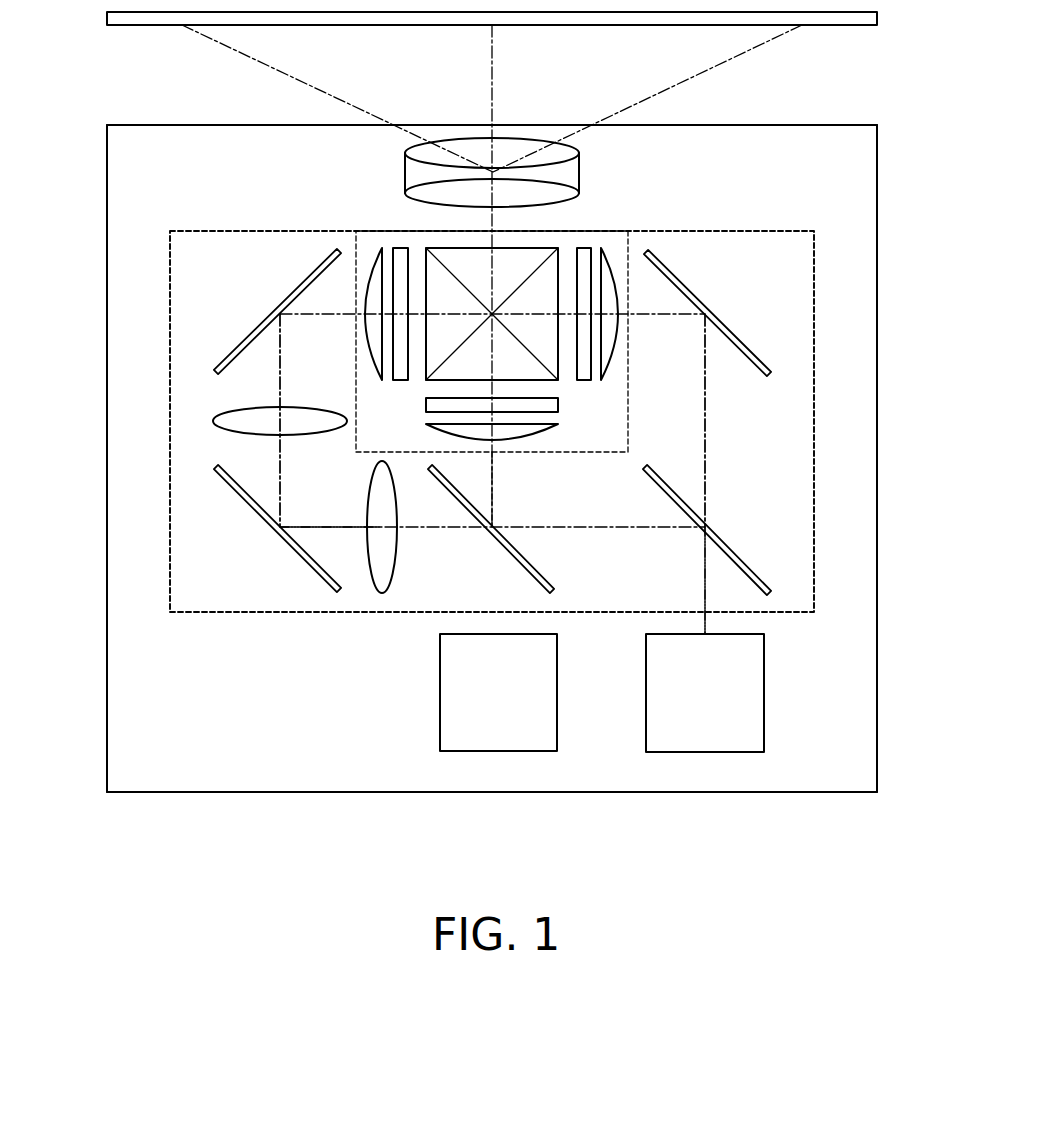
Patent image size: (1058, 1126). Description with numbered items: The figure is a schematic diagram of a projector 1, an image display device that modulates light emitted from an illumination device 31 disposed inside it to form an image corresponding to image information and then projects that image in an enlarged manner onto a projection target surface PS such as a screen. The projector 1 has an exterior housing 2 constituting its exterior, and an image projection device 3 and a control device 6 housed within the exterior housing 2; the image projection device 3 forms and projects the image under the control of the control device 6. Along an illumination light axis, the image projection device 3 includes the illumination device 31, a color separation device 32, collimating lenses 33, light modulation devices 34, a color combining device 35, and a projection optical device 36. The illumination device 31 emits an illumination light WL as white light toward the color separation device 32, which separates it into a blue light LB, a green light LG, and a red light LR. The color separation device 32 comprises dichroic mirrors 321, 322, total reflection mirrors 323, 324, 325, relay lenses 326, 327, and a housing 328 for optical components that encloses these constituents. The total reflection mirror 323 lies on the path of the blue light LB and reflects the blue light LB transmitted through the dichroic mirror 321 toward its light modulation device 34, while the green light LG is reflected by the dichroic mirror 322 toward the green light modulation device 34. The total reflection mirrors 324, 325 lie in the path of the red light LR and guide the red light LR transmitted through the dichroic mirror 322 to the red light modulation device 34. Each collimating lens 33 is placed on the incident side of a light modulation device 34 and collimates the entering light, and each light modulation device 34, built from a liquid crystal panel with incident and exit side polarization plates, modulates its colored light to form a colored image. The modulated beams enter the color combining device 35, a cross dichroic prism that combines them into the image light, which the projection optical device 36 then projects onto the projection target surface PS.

The projector 1 is at (116, 98).
The exterior housing 2 is at (107, 373).
The image projection device 3 is at (253, 680).
The control device 6 is at (440, 720).
The illumination device 31 is at (765, 722).
The color separation device 32 is at (796, 229).
The dichroic mirror 321 is at (746, 560).
The dichroic mirror 322 is at (513, 557).
The total reflection mirror 323 is at (732, 329).
The total reflection mirror 324 is at (255, 517).
The total reflection mirror 325 is at (268, 329).
The relay lens 326 is at (378, 595).
The relay lens 327 is at (258, 410).
The housing for optical components 328 is at (795, 614).
The collimating lens 33 is at (373, 247).
The light modulation device 34 is at (400, 247).
The color combining device 35 is at (472, 258).
The projection optical device 36 is at (405, 166).
The projection target surface PS is at (851, 26).
The red light LR is at (316, 526).
The green light LG is at (497, 485).
The blue light LB is at (708, 441).
The illumination light WL is at (705, 578).